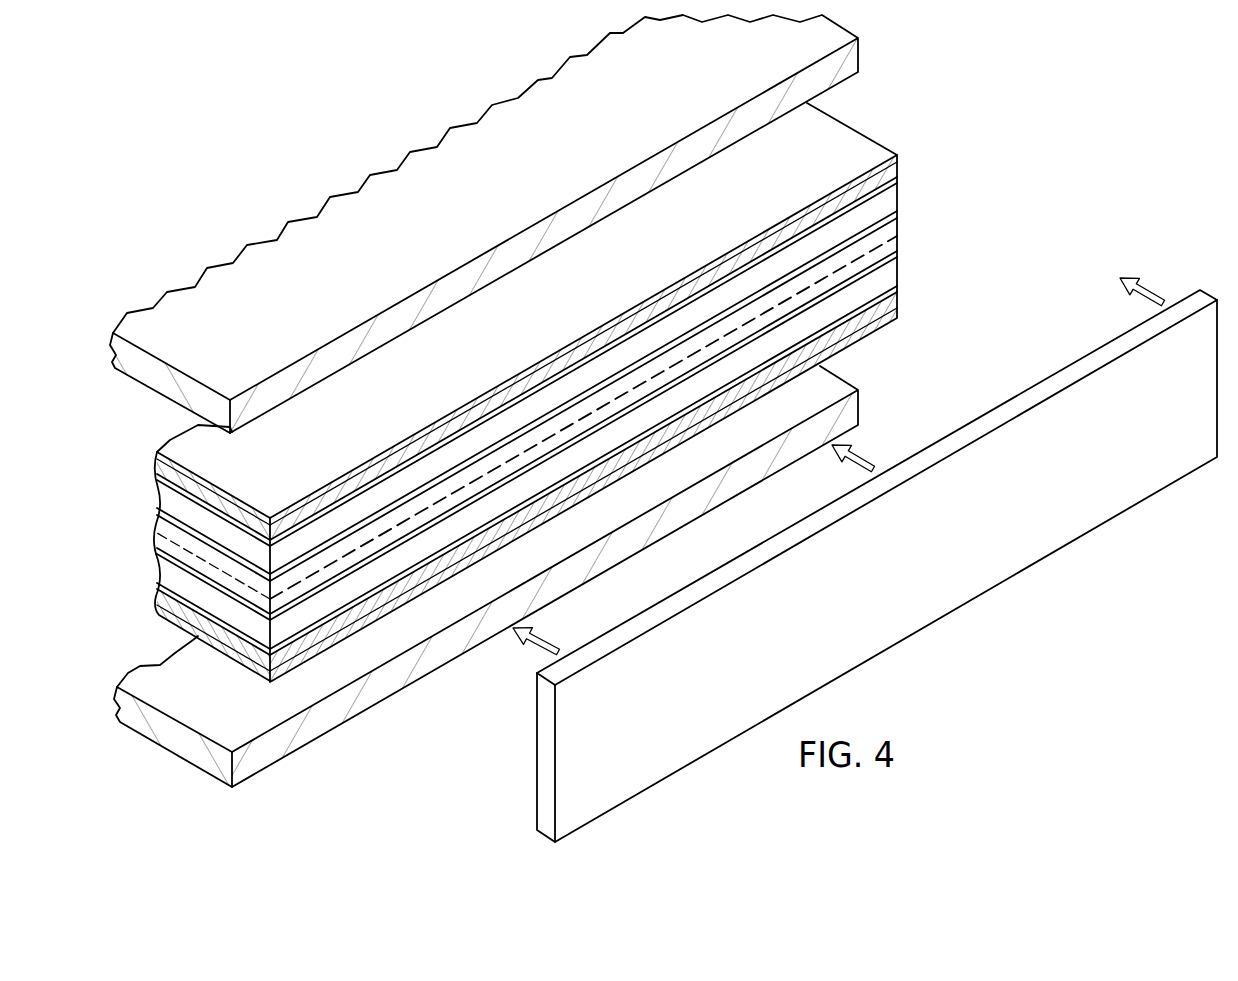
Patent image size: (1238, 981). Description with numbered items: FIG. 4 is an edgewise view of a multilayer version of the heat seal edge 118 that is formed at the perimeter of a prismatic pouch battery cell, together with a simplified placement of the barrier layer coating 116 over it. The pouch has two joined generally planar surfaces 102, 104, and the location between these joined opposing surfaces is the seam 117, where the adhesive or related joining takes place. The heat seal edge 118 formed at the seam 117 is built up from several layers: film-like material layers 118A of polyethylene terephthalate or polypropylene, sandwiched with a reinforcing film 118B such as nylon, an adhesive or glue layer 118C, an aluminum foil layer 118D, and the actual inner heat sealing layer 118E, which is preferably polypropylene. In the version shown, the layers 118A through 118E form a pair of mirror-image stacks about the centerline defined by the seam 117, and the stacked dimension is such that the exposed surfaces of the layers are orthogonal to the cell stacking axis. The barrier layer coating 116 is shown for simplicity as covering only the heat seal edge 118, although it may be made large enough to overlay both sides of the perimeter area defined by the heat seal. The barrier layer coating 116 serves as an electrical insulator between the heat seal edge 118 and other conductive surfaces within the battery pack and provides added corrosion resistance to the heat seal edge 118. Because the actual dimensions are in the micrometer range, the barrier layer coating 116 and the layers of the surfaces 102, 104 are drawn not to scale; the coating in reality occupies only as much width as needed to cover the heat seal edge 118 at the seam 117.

The planar surface 102 is at (852, 58).
The planar surface 104 is at (146, 724).
The barrier layer coating 116 is at (944, 589).
The seam 117 is at (897, 239).
The heat seal edge 118 is at (902, 237).
The film-like material layer 118A is at (157, 451).
The reinforcing film 118B is at (156, 462).
The adhesive layer 118C is at (156, 480).
The aluminum foil layer 118D is at (157, 502).
The inner heat sealing layer 118E is at (158, 534).